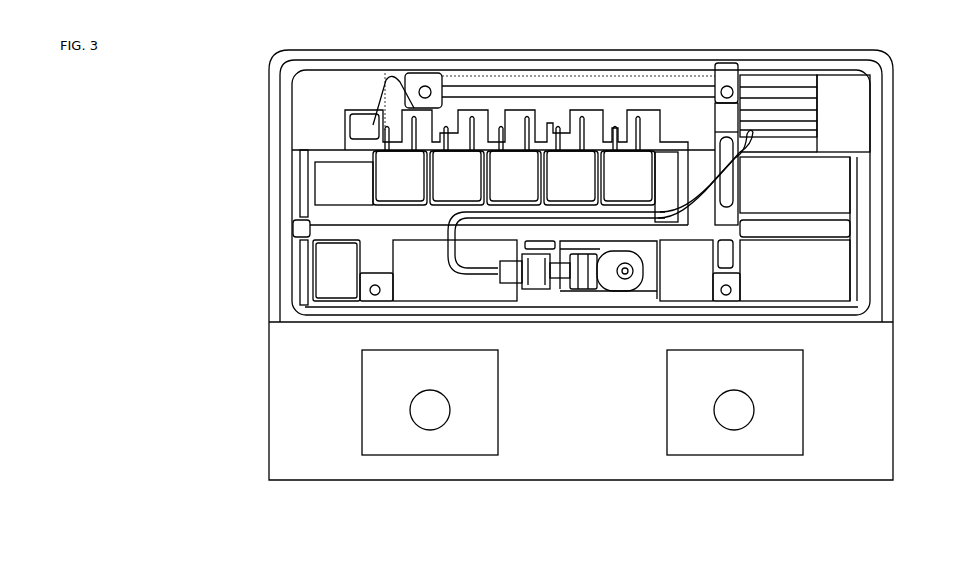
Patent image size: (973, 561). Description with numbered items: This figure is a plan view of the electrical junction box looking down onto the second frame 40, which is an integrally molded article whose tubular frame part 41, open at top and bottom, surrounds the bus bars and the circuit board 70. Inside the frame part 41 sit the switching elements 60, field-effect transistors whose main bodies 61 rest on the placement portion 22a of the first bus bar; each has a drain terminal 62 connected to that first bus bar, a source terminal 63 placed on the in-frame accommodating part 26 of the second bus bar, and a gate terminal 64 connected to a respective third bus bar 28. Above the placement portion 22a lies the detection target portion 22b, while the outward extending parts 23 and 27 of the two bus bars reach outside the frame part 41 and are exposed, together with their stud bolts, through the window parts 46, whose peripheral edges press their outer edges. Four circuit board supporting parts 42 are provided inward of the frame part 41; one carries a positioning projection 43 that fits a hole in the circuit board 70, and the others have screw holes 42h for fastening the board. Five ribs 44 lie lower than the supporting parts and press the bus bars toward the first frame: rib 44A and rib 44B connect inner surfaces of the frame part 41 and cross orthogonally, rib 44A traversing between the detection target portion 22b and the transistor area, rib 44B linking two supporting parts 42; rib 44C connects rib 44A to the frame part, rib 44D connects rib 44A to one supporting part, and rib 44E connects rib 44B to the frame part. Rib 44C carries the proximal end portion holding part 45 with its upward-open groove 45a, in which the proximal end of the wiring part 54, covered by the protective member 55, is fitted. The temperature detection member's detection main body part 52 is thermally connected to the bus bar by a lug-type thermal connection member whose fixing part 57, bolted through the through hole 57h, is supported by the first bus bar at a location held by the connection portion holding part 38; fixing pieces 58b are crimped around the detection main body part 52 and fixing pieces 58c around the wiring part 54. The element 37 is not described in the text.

The placement portion 22a is at (328, 205).
The detection target portion 22b is at (600, 293).
The outward extending part 23 is at (382, 442).
The in-frame accommodating part 26 is at (505, 115).
The outward extending part 27 is at (686, 442).
The third bus bar 28 is at (385, 108).
The fuse 37 is at (600, 108).
The connection portion holding part 38 is at (429, 423).
The second frame 40 is at (266, 122).
The frame part 41 is at (281, 170).
The circuit board supporting part 42 is at (442, 80).
The screw hole 42h is at (425, 86).
The positioning projection 43 is at (725, 75).
The rib 44 is at (455, 270).
The rib 44A is at (455, 270).
The rib 44B is at (743, 203).
The rib 44C is at (510, 297).
The rib 44D is at (336, 270).
The rib 44E is at (772, 80).
The proximal end portion holding part 45 is at (548, 292).
The groove 45a is at (520, 256).
The window part 46 is at (493, 437).
The detection main body part 52 is at (566, 291).
The wiring part 54 is at (746, 160).
The protective member 55 is at (505, 286).
The fixing part 57 is at (641, 293).
The through hole 57h is at (625, 279).
The fixing piece 58b is at (578, 300).
The fixing piece 58c is at (540, 297).
The switching element 60 is at (655, 170).
The main body 61 is at (373, 182).
The drain terminal 62 is at (398, 208).
The source terminal 63 is at (384, 122).
The gate terminal 64 is at (406, 137).
The circuit board 70 is at (532, 86).